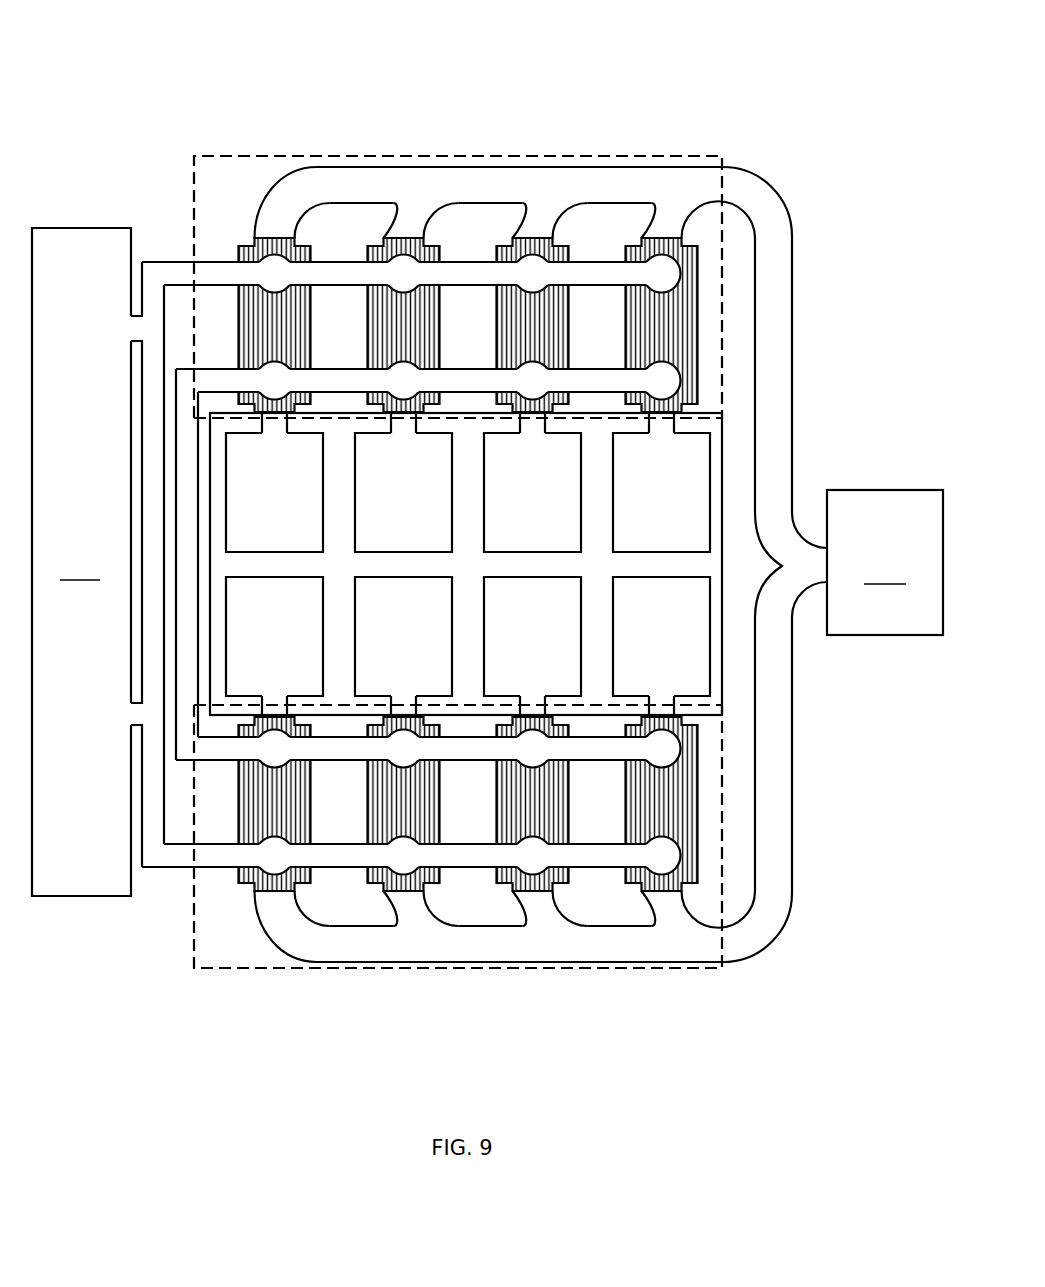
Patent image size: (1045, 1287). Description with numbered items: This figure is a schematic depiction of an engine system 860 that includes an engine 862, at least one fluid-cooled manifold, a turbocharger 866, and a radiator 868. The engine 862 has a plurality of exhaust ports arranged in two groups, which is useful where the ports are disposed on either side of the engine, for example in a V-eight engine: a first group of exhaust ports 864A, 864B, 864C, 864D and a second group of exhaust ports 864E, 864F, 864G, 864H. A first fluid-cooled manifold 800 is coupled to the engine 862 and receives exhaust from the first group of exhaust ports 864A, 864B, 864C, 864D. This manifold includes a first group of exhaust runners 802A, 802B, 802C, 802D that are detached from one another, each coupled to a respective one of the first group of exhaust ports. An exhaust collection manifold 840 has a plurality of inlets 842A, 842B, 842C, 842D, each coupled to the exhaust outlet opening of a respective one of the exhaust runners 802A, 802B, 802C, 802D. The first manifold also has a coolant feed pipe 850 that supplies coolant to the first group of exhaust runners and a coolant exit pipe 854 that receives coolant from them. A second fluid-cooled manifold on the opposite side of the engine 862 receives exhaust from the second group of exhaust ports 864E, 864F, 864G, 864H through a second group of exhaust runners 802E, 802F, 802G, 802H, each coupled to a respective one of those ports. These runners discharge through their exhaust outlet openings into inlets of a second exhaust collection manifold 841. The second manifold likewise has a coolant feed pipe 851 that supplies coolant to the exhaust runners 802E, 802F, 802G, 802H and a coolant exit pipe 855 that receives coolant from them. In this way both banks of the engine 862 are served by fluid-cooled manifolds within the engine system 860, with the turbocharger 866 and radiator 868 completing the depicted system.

The first fluid-cooled manifold 800 is at (195, 187).
The exhaust runner 802A is at (441, 326).
The exhaust runner 802B is at (565, 324).
The exhaust runner 802C is at (310, 327).
The exhaust runner 802D is at (695, 323).
The exhaust runner 802E is at (440, 802).
The exhaust runner 802F is at (565, 804).
The exhaust runner 802G is at (310, 803).
The exhaust runner 802H is at (700, 846).
The exhaust collection manifold 840 is at (483, 185).
The exhaust collection manifold 841 is at (668, 942).
The inlet 842A is at (405, 217).
The inlet 842B is at (533, 222).
The inlet 842C is at (283, 222).
The inlet 842D is at (663, 222).
The coolant feed pipe 850 is at (665, 378).
The coolant feed pipe 851 is at (637, 752).
The coolant exit pipe 854 is at (228, 277).
The coolant exit pipe 855 is at (228, 855).
The engine system 860 is at (760, 81).
The engine 862 is at (722, 676).
The exhaust port 864A is at (405, 423).
The exhaust port 864B is at (534, 423).
The exhaust port 864C is at (276, 423).
The exhaust port 864D is at (663, 423).
The exhaust port 864E is at (406, 707).
The exhaust port 864F is at (535, 707).
The exhaust port 864G is at (277, 707).
The exhaust port 864H is at (664, 707).
The turbocharger 866 is at (885, 562).
The radiator 868 is at (115, 562).